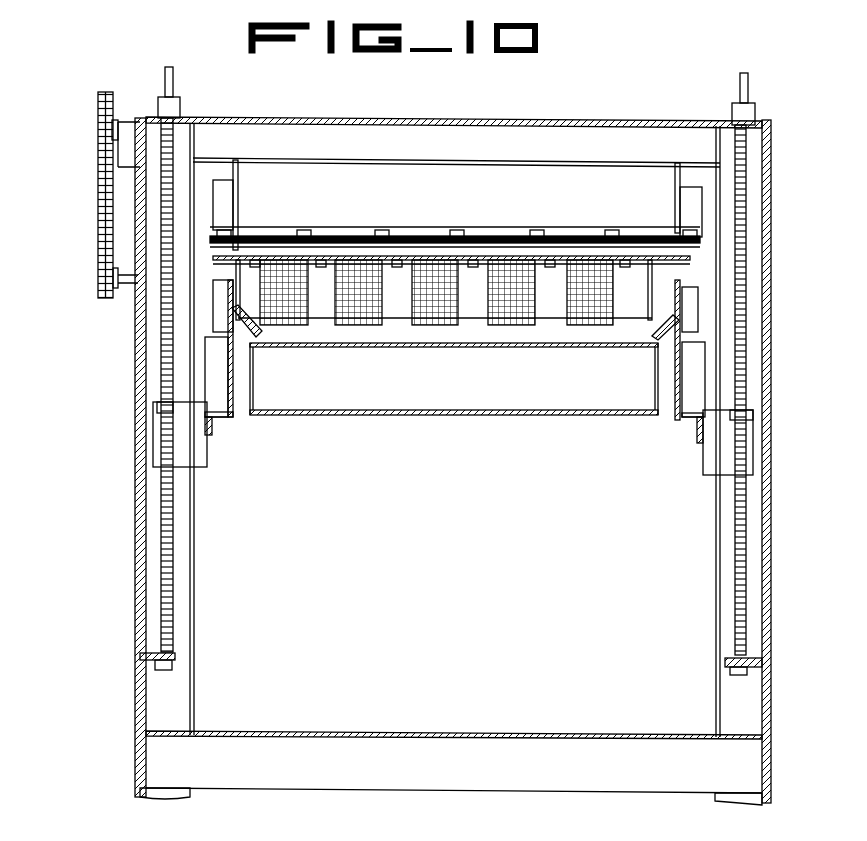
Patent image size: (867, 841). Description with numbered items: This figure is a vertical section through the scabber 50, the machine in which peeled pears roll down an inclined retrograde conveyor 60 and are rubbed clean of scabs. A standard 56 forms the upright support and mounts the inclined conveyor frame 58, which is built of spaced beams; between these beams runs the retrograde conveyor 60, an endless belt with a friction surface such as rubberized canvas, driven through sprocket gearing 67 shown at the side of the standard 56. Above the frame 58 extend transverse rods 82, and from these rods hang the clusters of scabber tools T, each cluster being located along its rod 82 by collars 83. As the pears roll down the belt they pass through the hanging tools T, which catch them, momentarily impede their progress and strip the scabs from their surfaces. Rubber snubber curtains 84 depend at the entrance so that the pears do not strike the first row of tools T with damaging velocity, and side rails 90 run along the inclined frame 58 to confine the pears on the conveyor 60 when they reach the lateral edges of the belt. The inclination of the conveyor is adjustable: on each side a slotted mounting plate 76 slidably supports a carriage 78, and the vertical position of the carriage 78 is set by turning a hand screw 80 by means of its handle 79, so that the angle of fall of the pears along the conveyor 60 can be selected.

The scabber 50 is at (630, 93).
The standard 56 is at (135, 512).
The inclined conveyor frame 58 is at (218, 413).
The retrograde conveyor 60 is at (403, 330).
The sprocket gearing 67 is at (98, 230).
The slotted mounting plate 76 is at (210, 440).
The carriage 78 is at (197, 465).
The handle 79 is at (173, 82).
The hand screw 80 is at (167, 527).
The transverse rods 82 is at (556, 265).
The collars 83 is at (305, 258).
The rubber snubber curtains 84 is at (400, 277).
The side rails 90 is at (258, 335).
The scabber tools T is at (340, 320).